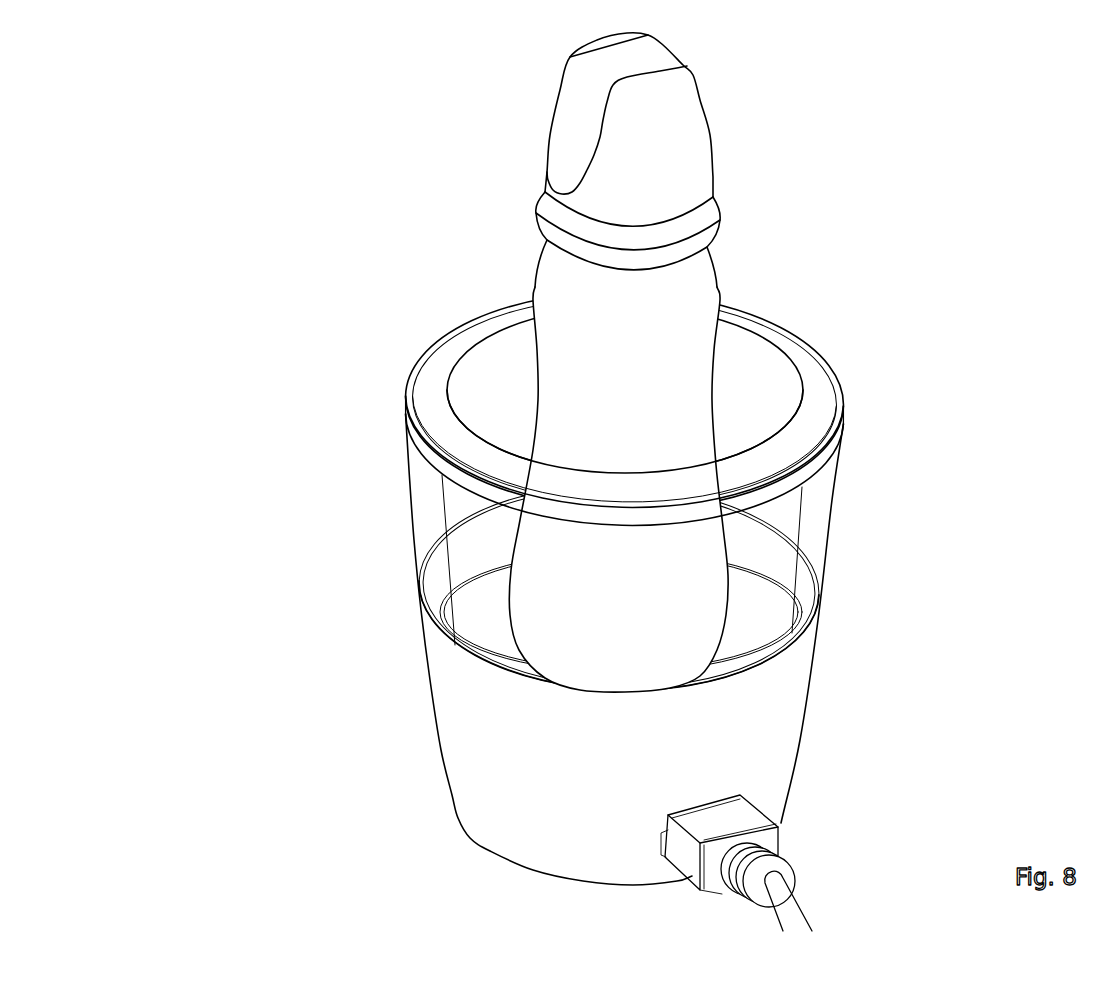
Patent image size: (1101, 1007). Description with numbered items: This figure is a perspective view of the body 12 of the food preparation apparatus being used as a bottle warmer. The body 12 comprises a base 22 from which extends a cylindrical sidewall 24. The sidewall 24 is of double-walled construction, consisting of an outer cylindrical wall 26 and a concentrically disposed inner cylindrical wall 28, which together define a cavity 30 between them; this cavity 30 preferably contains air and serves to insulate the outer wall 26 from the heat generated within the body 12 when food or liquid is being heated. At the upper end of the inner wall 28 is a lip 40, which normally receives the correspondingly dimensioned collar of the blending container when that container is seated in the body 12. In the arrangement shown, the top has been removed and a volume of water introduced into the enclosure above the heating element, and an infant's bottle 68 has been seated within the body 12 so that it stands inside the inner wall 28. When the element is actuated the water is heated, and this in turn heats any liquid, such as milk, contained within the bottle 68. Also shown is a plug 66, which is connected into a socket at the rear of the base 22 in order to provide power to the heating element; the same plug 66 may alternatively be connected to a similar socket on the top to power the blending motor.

The body 12 is at (594, 482).
The base 22 is at (457, 738).
The cylindrical sidewall 24 is at (673, 492).
The outer cylindrical wall 26 is at (837, 463).
The inner cylindrical wall 28 is at (792, 588).
The cavity 30 is at (813, 543).
The lip 40 is at (507, 448).
The plug 66 is at (727, 805).
The bottle 68 is at (597, 363).